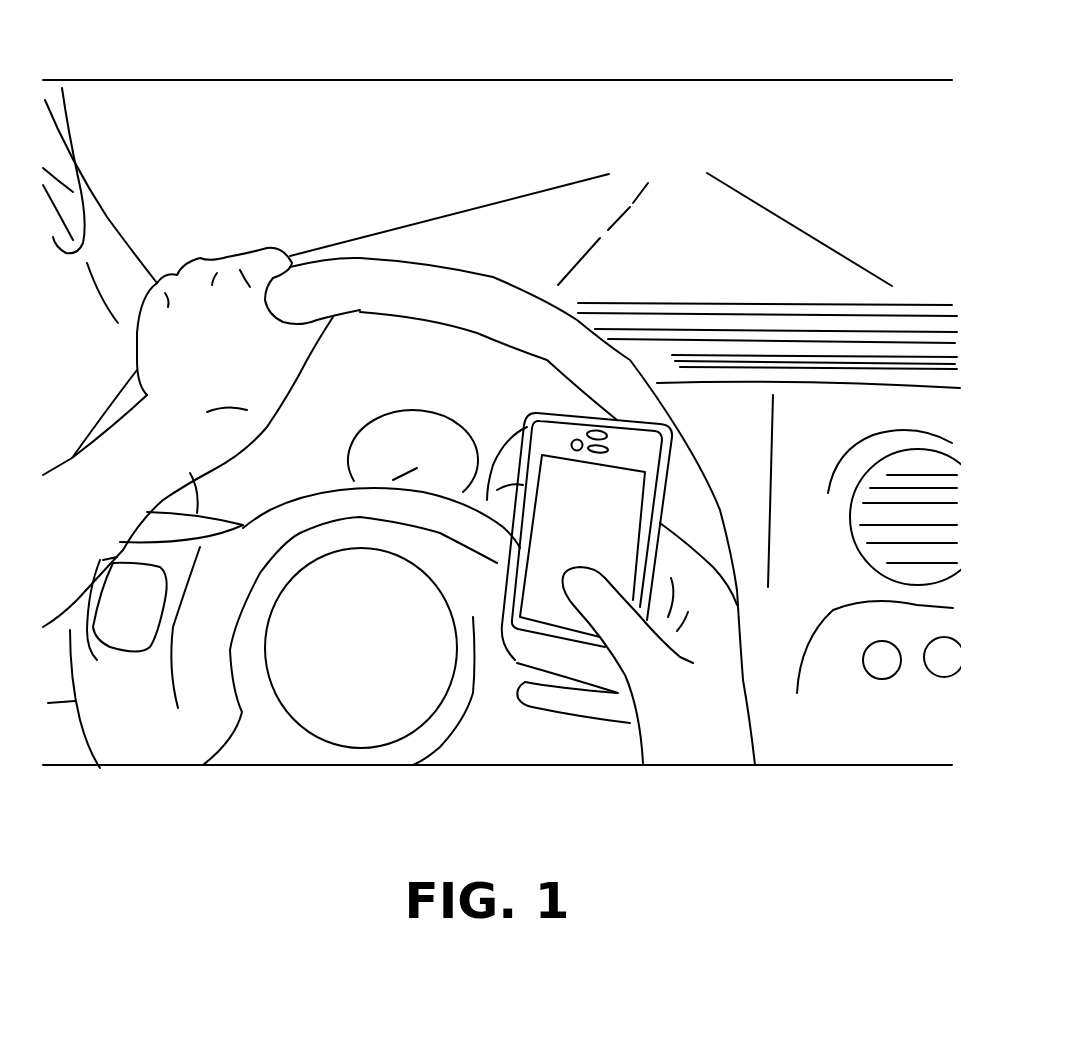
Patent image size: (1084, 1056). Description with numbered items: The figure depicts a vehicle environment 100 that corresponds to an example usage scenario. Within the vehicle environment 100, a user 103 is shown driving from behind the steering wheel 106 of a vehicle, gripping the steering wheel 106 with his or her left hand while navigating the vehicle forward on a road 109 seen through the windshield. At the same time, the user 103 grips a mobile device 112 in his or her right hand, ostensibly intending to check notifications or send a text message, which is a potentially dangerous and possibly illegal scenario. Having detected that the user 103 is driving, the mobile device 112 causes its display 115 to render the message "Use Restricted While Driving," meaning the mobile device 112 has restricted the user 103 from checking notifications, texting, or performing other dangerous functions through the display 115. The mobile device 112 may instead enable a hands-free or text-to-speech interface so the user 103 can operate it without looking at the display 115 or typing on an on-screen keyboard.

The vehicle environment 100 is at (781, 126).
The user 103 is at (697, 713).
The steering wheel 106 is at (387, 293).
The road 109 is at (712, 235).
The mobile device 112 is at (571, 629).
The display 115 is at (538, 593).